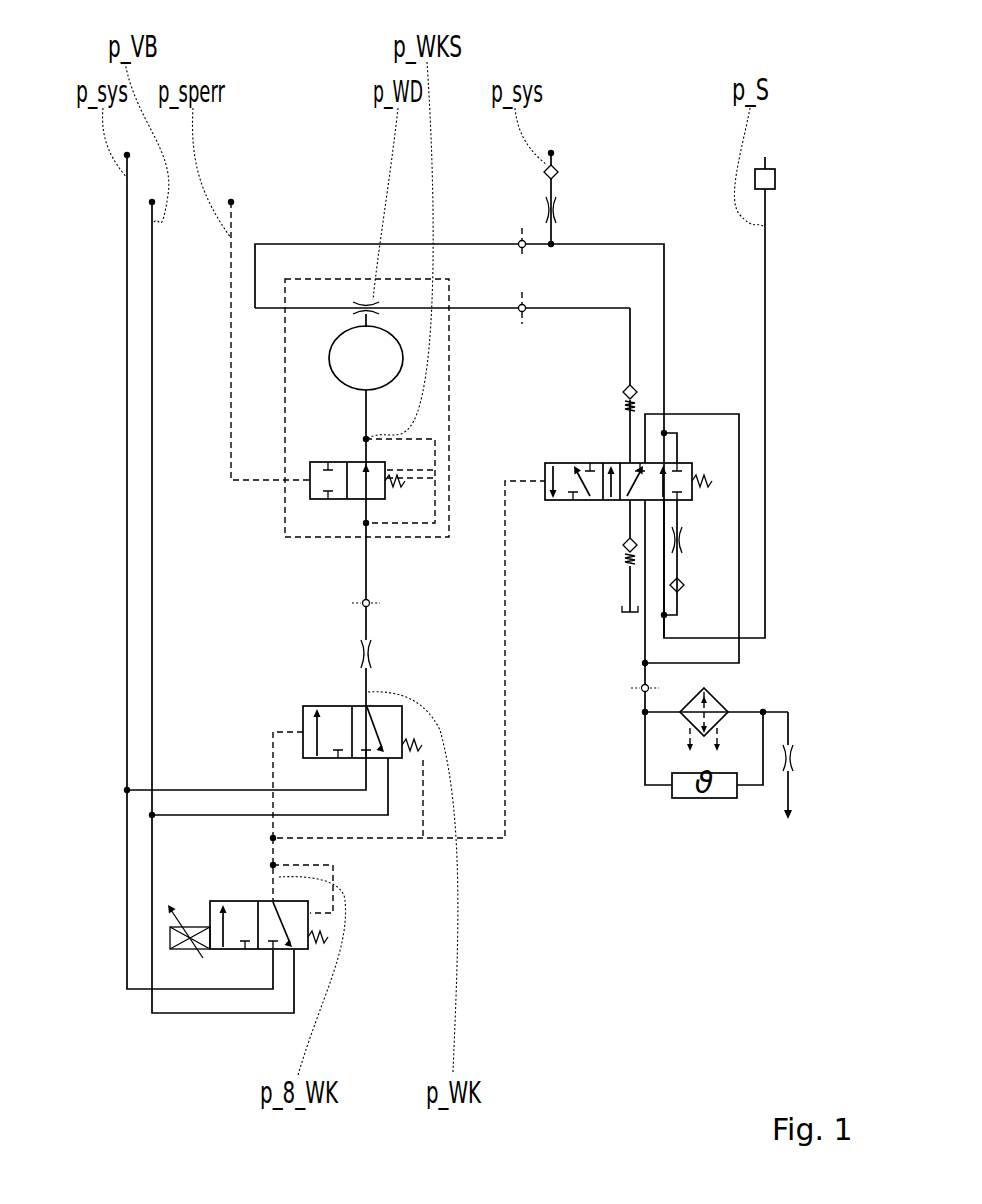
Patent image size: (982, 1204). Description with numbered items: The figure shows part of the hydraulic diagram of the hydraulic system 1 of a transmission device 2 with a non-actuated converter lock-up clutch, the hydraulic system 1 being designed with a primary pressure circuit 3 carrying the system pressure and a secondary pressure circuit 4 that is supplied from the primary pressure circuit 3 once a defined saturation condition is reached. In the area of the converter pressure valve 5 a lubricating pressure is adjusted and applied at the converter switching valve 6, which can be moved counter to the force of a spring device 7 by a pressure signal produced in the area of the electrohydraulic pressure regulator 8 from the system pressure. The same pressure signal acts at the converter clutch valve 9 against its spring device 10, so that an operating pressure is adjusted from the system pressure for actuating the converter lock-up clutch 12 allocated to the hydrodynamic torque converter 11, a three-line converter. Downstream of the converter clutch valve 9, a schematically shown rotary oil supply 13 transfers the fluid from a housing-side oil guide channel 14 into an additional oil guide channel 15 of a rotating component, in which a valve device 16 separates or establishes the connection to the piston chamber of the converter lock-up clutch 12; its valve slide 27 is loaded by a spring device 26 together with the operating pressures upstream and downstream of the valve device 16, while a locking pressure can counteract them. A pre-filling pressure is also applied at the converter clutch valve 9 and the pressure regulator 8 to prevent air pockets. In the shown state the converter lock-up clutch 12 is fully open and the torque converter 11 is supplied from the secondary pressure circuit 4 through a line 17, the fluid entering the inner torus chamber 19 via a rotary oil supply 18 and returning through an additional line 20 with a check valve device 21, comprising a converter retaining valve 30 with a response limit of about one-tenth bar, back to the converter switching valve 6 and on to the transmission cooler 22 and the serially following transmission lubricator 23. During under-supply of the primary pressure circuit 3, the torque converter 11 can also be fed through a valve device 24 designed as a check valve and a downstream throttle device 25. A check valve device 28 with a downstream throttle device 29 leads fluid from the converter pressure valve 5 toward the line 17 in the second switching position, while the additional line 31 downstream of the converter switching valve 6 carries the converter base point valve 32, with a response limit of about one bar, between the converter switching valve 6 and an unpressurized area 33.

The hydraulic system 1 is at (178, 1024).
The transmission device 2 is at (666, 934).
The primary pressure circuit 3 is at (258, 712).
The secondary pressure circuit 4 is at (779, 600).
The converter pressure valve 5 is at (771, 176).
The converter switching valve 6 is at (592, 456).
The spring device 7 is at (703, 467).
The electrohydraulic pressure regulator 8 is at (202, 903).
The converter clutch valve 9 is at (288, 707).
The spring device 10 is at (423, 756).
The hydrodynamic torque converter 11 is at (364, 292).
The converter lock-up clutch 12 is at (347, 352).
The rotary oil supply 13 is at (382, 604).
The oil guide channel 14 is at (366, 693).
The additional oil guide channel 15 is at (368, 571).
The valve device 16 is at (302, 496).
The line 17 is at (628, 312).
The rotary oil supply 18 is at (522, 236).
The inner torus chamber 19 is at (357, 306).
The additional line 20 is at (563, 307).
The check valve device 21 is at (637, 385).
The transmission cooler 22 is at (711, 704).
The transmission lubricator 23 is at (794, 752).
The valve device 24 is at (557, 172).
The throttle device 25 is at (559, 207).
The spring device 26 is at (408, 491).
The valve slide 27 is at (343, 473).
The check valve device 28 is at (684, 582).
The throttle device 29 is at (690, 538).
The converter retaining valve 30 is at (635, 393).
The additional line 31 is at (633, 518).
The converter base point valve 32 is at (634, 537).
The unpressurized area 33 is at (630, 617).